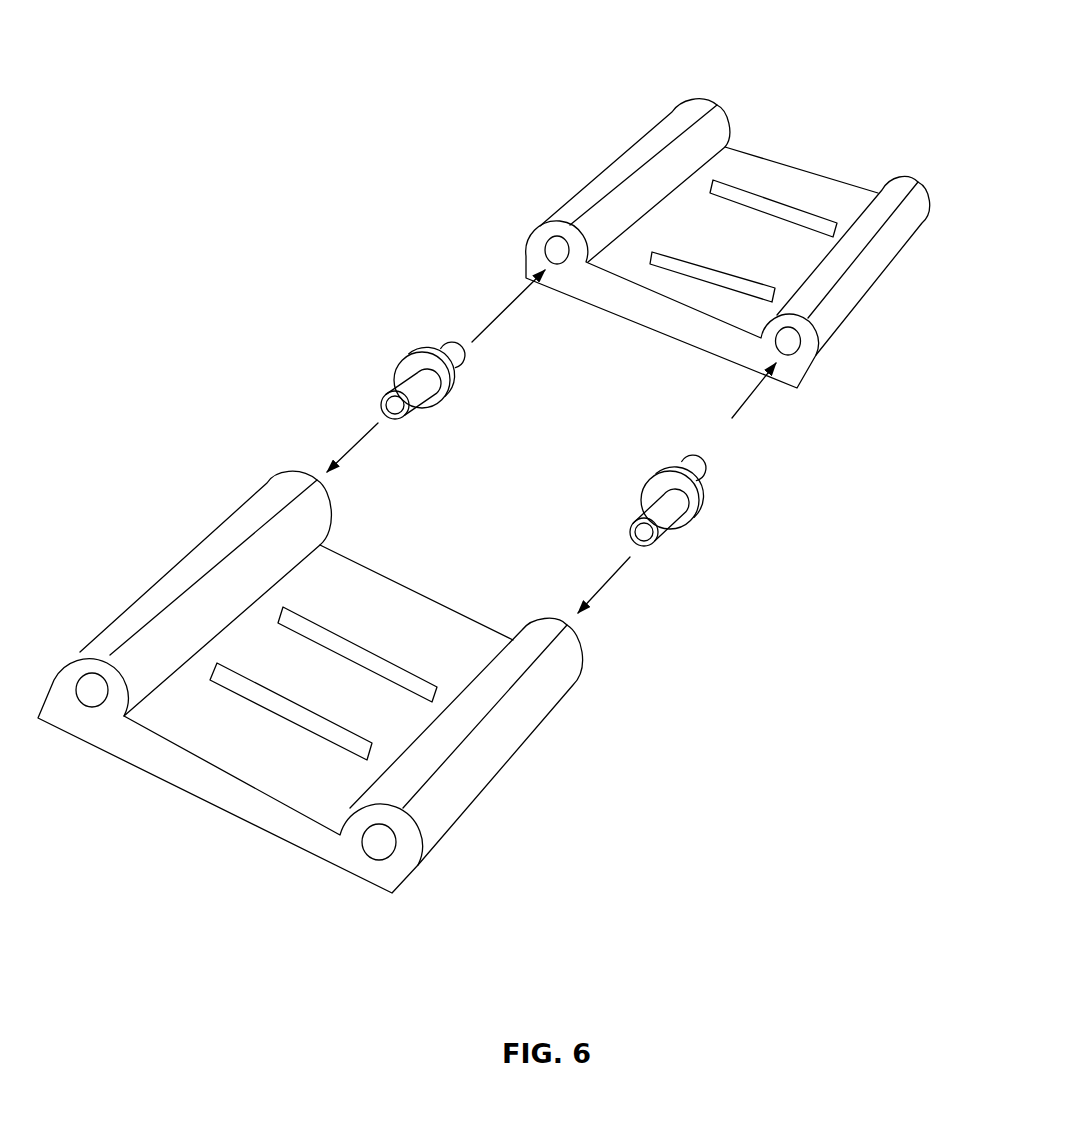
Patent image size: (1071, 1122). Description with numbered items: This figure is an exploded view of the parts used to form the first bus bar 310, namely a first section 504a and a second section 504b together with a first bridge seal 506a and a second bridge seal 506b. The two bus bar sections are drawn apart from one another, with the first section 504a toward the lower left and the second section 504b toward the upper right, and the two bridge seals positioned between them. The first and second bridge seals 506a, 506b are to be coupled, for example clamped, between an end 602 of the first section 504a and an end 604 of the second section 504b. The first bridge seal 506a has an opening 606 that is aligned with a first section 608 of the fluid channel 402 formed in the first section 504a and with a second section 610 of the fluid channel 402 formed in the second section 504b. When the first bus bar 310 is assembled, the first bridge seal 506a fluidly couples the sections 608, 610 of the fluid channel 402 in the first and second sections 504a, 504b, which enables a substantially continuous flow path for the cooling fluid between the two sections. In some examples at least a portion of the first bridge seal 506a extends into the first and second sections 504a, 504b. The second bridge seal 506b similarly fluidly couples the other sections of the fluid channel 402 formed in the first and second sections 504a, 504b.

The first bus bar 310 is at (232, 75).
The fluid channel 402 is at (545, 243).
The first section 504a is at (287, 660).
The second section 504b is at (698, 230).
The first bridge seal 506a is at (708, 502).
The second bridge seal 506b is at (415, 350).
The end of the first section 602 is at (428, 598).
The end of the second section 604 is at (673, 328).
The opening 606 is at (652, 537).
The first section of the fluid channel 608 is at (517, 713).
The second section of the fluid channel 610 is at (857, 283).